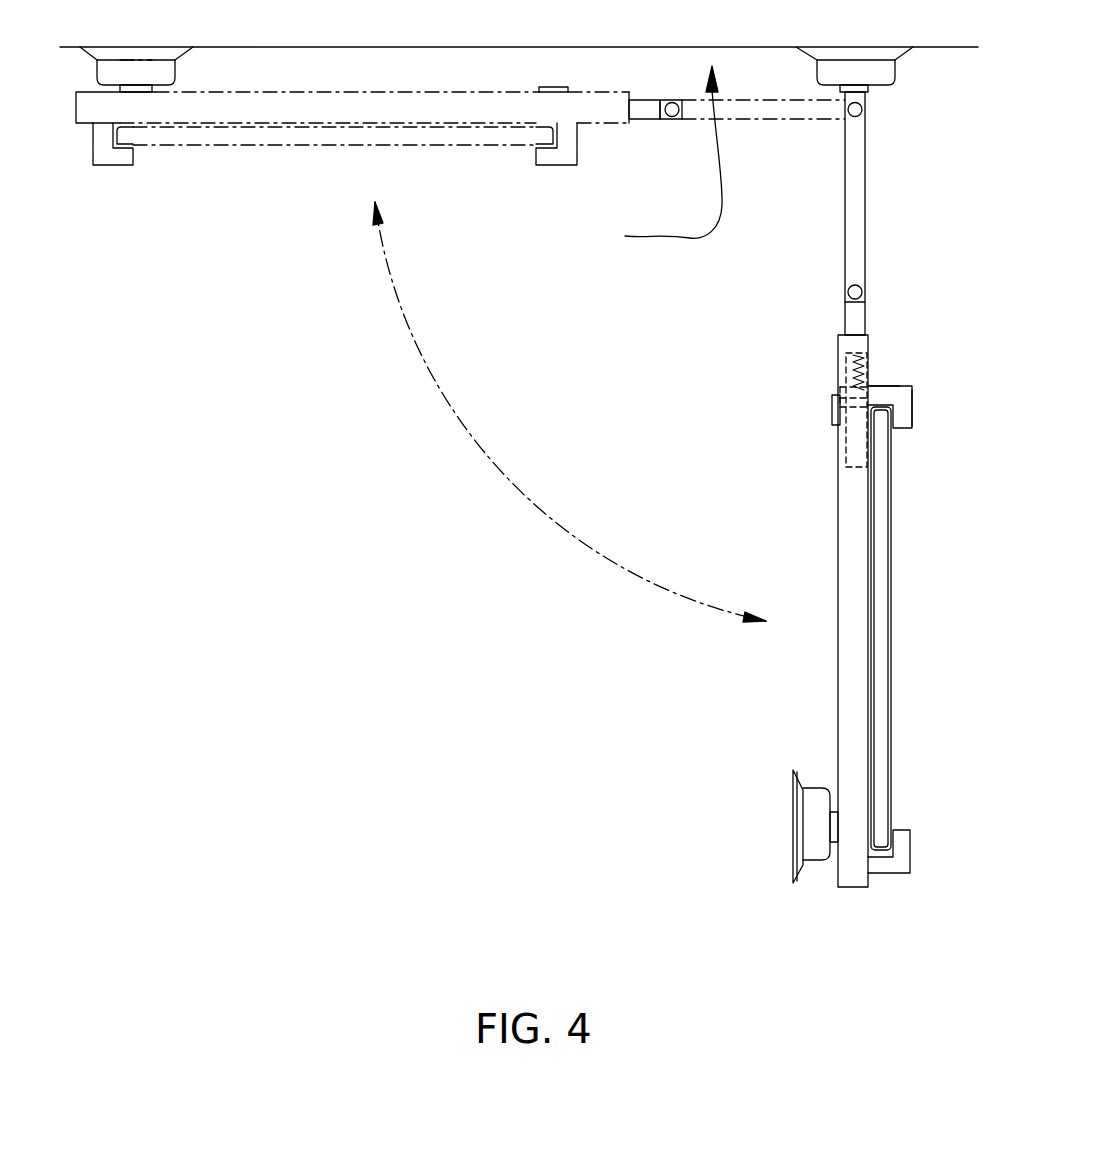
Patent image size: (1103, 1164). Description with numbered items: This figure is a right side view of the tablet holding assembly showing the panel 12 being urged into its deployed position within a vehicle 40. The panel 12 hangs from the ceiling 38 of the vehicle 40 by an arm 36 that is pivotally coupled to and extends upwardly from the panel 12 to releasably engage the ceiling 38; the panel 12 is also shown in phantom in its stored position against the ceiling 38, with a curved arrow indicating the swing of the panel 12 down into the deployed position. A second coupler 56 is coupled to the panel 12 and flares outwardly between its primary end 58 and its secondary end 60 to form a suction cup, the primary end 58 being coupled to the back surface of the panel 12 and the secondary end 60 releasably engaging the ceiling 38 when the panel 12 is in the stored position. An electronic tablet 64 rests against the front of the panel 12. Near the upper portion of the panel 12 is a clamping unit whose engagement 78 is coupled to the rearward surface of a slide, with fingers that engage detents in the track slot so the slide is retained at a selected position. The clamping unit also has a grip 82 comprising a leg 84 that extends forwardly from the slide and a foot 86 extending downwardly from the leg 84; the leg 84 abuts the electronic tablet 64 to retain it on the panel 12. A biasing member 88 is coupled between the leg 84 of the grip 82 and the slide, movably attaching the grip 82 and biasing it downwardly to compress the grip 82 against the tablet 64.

The panel 12 is at (838, 335).
The arm 36 is at (866, 225).
The ceiling 38 is at (926, 48).
The vehicle 40 is at (651, 160).
The second coupler 56 is at (816, 858).
The primary end 58 is at (834, 812).
The secondary end 60 is at (793, 818).
The electronic tablet 64 is at (890, 618).
The engagement 78 is at (832, 407).
The grip 82 is at (906, 386).
The leg 84 is at (890, 386).
The foot 86 is at (912, 410).
The biasing member 88 is at (850, 370).